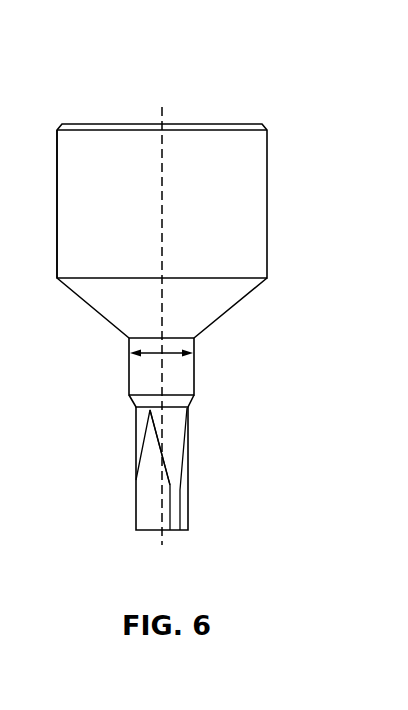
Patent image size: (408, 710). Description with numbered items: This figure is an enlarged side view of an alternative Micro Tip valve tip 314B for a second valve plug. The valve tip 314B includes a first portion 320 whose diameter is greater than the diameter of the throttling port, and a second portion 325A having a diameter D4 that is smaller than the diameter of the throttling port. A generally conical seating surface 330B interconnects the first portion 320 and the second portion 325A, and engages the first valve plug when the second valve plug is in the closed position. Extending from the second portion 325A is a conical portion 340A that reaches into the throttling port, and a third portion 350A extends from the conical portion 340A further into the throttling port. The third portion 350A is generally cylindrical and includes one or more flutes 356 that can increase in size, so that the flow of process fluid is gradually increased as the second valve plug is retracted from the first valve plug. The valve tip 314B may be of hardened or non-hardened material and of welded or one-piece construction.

The valve tip 314B is at (138, 78).
The first portion 320 is at (247, 203).
The seating surface 330B is at (311, 265).
The second portion 325A is at (181, 378).
The diameter D4 is at (152, 358).
The conical portion 340A is at (192, 400).
The third portion 350A is at (124, 468).
The flutes 356 is at (146, 499).